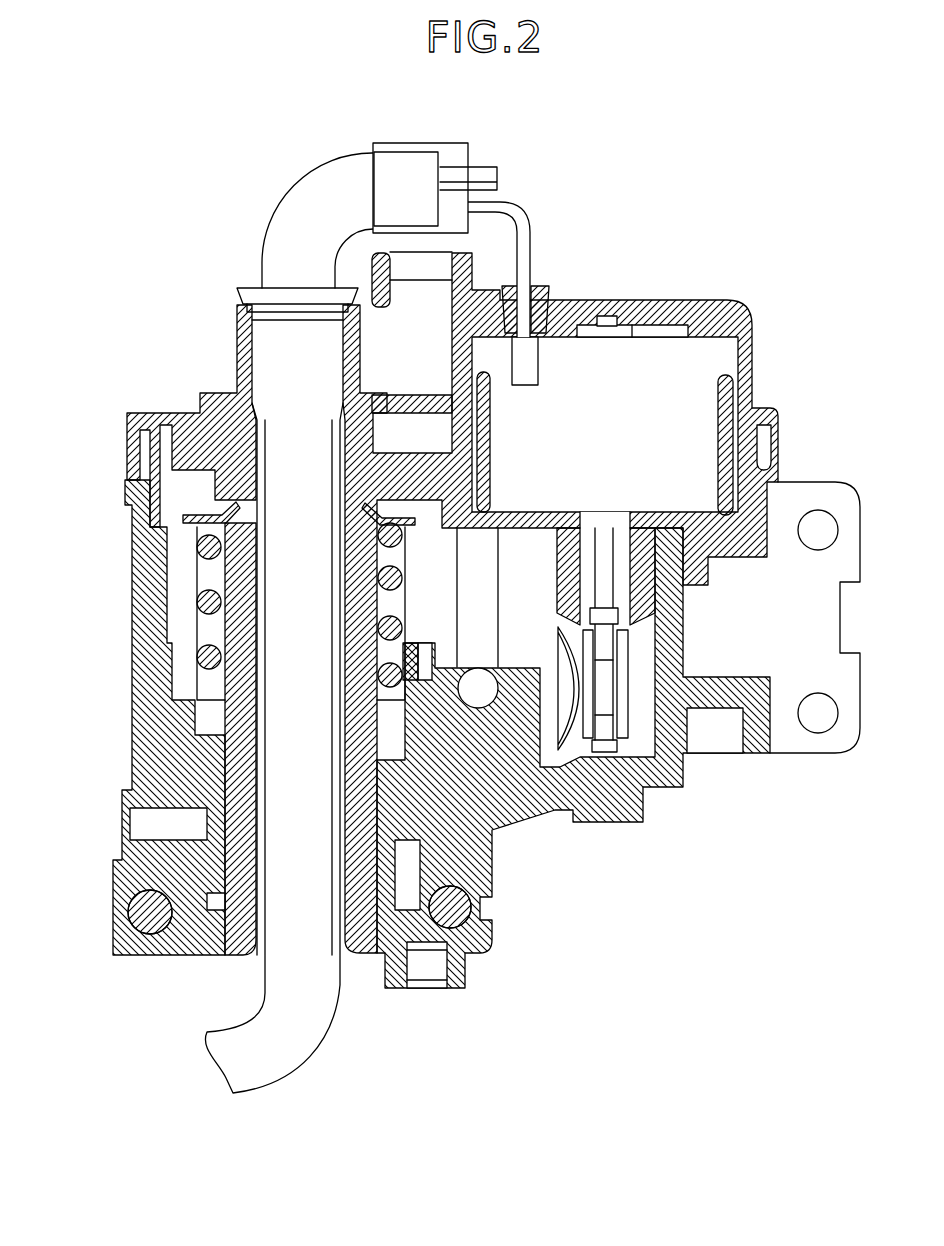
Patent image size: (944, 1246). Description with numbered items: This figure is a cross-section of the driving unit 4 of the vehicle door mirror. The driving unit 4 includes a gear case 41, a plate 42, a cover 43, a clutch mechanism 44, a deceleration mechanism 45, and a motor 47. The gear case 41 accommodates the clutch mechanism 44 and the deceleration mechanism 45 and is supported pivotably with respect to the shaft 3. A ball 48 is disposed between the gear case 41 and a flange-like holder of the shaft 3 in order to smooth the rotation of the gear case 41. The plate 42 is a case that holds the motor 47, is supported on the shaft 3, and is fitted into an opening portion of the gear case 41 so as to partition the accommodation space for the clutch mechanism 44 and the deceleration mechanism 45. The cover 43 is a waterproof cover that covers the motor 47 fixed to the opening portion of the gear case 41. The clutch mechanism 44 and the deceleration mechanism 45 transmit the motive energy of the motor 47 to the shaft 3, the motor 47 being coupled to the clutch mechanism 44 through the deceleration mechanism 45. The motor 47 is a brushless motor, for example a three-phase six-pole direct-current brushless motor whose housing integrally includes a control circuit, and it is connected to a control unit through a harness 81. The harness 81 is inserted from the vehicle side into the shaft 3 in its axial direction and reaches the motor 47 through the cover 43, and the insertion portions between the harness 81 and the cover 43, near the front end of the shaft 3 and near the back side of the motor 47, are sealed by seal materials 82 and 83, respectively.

The shaft 3 is at (131, 962).
The driving unit 4 is at (769, 293).
The gear case 41 is at (132, 665).
The plate 42 is at (183, 513).
The cover 43 is at (167, 412).
The clutch mechanism 44 is at (197, 580).
The deceleration mechanism 45 is at (625, 668).
The motor 47 is at (705, 398).
The ball 48 is at (134, 897).
The harness 81 is at (296, 188).
The seal material 82 is at (238, 294).
The seal material 83 is at (537, 290).